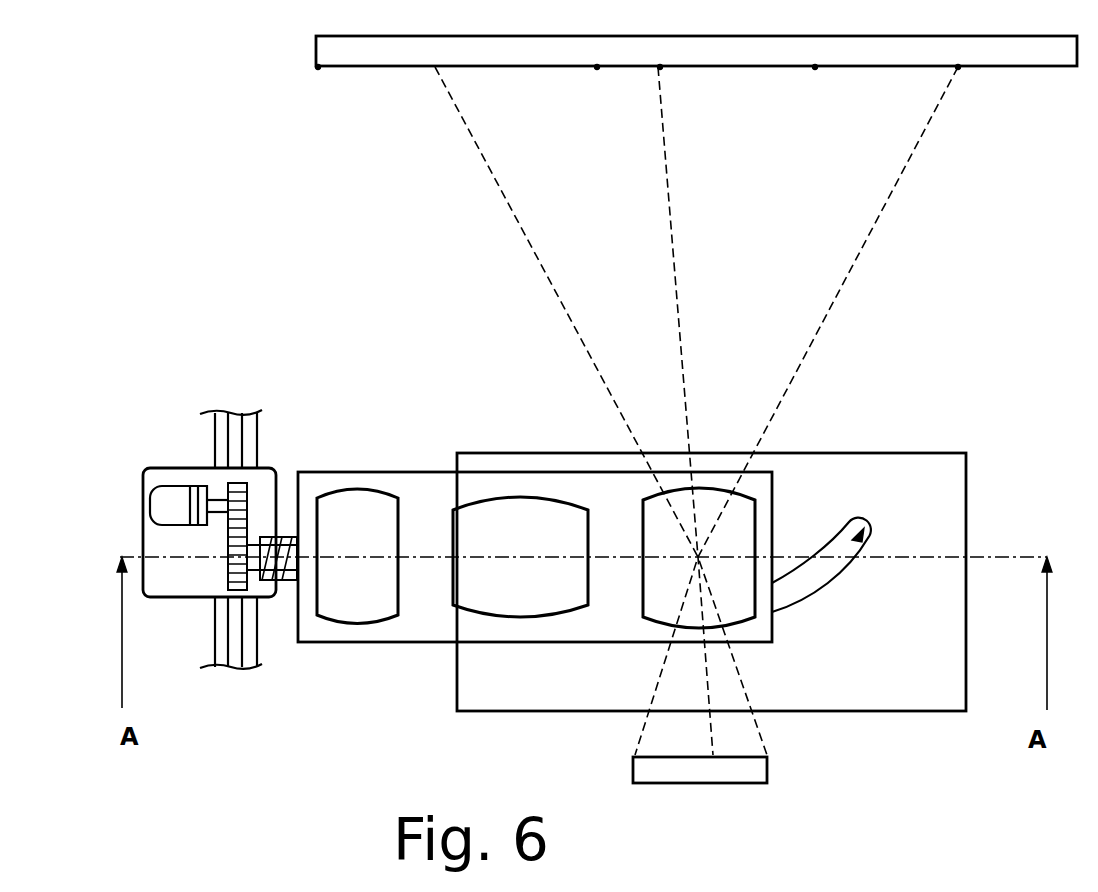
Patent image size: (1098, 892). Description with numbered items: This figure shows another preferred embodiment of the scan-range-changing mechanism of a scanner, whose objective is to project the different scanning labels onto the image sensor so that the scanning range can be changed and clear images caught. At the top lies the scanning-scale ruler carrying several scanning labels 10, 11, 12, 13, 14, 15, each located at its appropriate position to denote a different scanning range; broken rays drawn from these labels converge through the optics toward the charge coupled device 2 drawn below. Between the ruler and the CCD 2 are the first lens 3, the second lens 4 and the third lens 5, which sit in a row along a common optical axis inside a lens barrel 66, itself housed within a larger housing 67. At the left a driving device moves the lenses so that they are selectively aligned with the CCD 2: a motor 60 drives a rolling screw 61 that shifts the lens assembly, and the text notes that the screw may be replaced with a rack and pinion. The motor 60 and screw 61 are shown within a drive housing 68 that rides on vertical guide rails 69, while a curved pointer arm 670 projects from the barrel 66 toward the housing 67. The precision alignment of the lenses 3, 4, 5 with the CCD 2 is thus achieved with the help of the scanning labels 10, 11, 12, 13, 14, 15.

The charge coupled device (CCD) 2 is at (672, 770).
The first lens 3 is at (360, 510).
The second lens 4 is at (530, 520).
The third lens 5 is at (710, 500).
The scanning label 10 is at (1077, 67).
The scanning label 11 is at (318, 67).
The scanning label 12 is at (597, 67).
The scanning label 13 is at (660, 67).
The scanning label 14 is at (815, 67).
The scanning label 15 is at (958, 67).
The motor 60 is at (175, 505).
The rolling screw 61 is at (285, 577).
The lens barrel 66 is at (405, 628).
The housing 67 is at (922, 697).
The drive housing 68 is at (163, 590).
The guide rails 69 is at (237, 664).
The pointer arm 670 is at (863, 530).